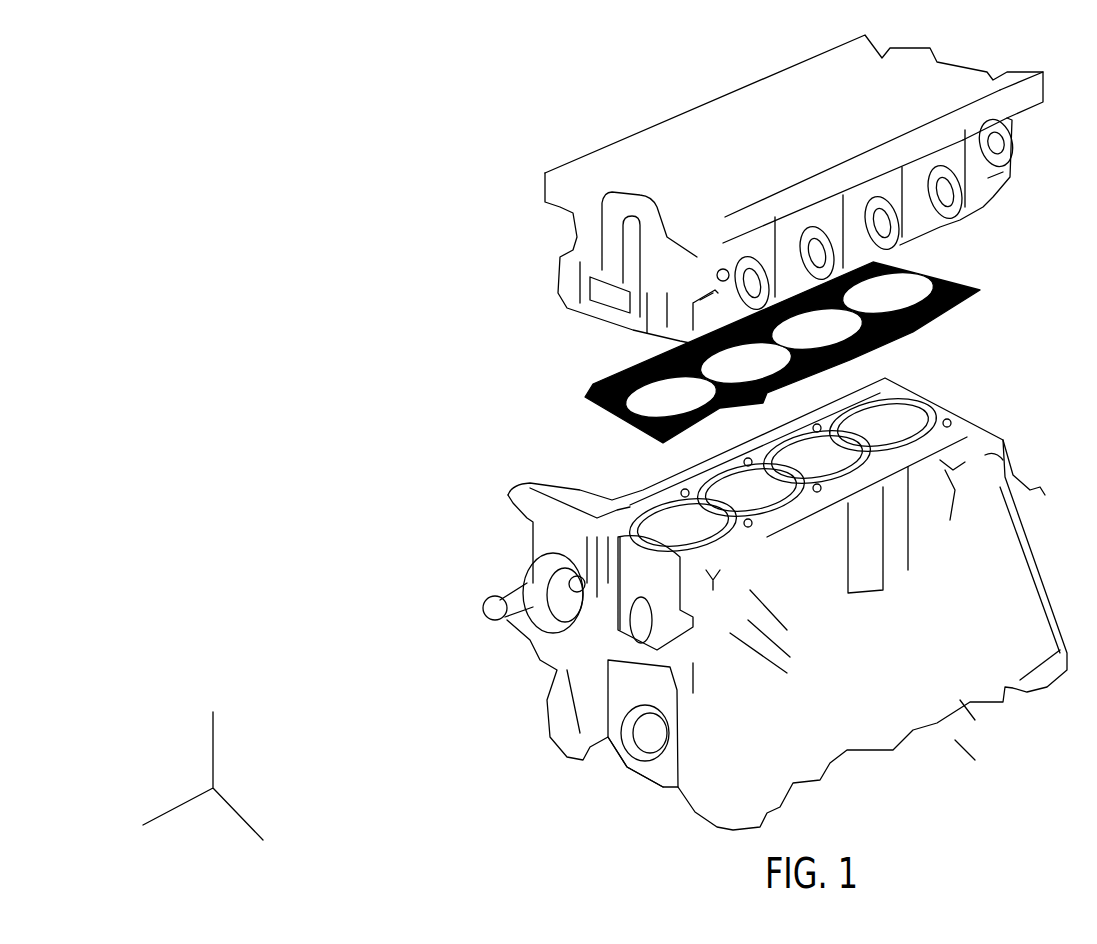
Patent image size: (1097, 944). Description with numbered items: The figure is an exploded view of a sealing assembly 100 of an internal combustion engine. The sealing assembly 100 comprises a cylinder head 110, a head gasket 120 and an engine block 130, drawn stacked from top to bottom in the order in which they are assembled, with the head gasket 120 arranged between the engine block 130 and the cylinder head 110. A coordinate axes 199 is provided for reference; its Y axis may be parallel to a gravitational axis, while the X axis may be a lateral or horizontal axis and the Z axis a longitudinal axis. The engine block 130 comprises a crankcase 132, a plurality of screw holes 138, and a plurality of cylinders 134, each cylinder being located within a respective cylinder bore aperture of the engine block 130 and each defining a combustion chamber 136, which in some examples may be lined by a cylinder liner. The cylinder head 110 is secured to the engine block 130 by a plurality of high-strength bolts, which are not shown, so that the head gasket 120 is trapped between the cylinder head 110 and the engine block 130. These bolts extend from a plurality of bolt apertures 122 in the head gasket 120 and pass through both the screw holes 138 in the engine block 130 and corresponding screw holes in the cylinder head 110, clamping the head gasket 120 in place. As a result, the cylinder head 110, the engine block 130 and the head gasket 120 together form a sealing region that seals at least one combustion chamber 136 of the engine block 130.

The sealing assembly 100 is at (180, 66).
The cylinder head 110 is at (488, 229).
The head gasket 120 is at (488, 391).
The bolt apertures 122 is at (870, 258).
The engine block 130 is at (488, 552).
The crankcase 132 is at (887, 677).
The cylinders 134 is at (860, 460).
The combustion chamber 136 is at (832, 466).
The screw holes 138 is at (880, 457).
The coordinate axes 199 is at (152, 692).